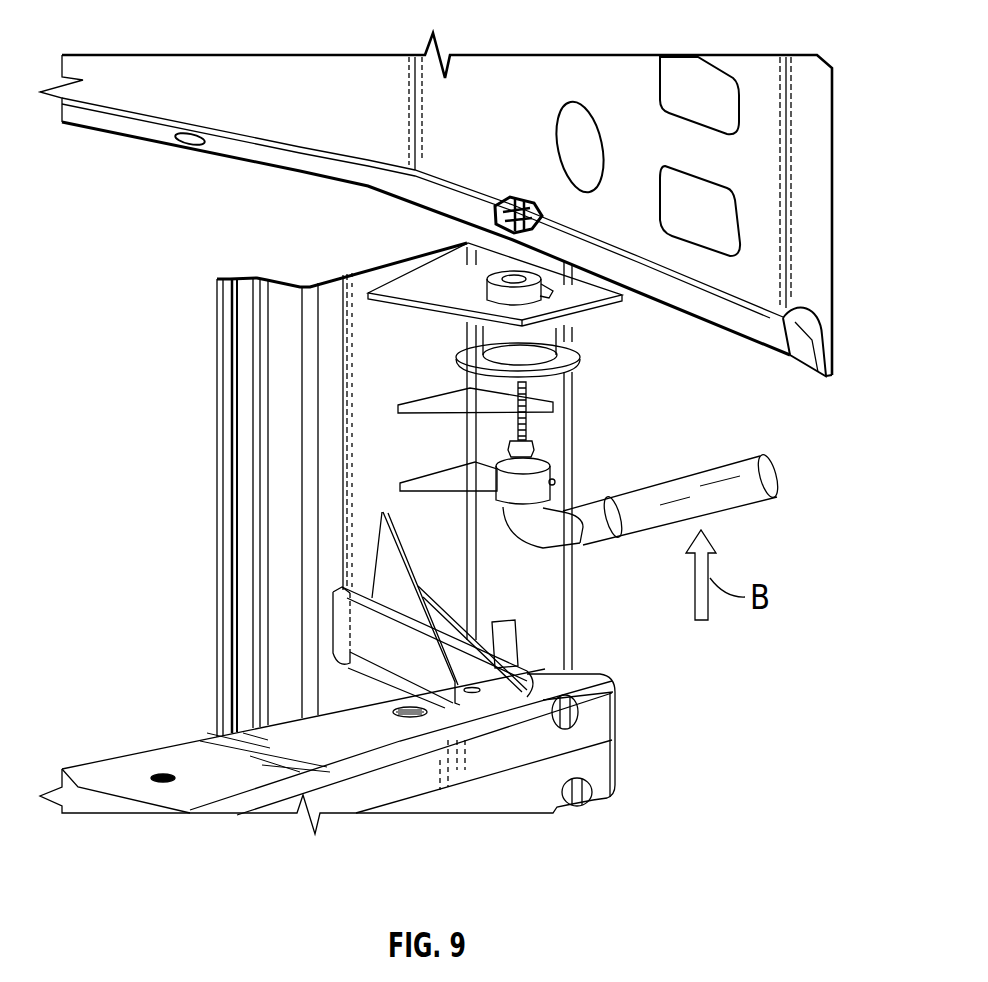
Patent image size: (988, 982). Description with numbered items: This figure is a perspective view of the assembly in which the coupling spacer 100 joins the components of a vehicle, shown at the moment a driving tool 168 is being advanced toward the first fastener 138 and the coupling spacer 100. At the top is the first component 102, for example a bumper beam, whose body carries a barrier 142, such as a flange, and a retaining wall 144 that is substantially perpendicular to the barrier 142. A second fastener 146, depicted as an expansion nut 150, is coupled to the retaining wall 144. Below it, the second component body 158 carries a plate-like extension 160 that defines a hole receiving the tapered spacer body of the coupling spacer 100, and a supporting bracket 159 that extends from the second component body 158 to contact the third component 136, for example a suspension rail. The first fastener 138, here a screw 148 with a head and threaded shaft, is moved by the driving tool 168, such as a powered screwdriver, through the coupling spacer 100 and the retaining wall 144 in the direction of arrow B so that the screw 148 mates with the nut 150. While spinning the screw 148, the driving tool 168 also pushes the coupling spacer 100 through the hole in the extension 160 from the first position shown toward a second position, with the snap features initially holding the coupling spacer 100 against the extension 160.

The coupling spacer 100 is at (598, 347).
The first component 102 is at (748, 68).
The third component 136 is at (500, 795).
The first fastener 138 is at (528, 432).
The barrier 142 is at (826, 376).
The retaining wall 144 is at (255, 150).
The second fastener 146 is at (522, 198).
The screw 148 is at (513, 425).
The nut 150 is at (512, 205).
The second component body 158 is at (393, 262).
The supporting bracket 159 is at (520, 668).
The extension 160 is at (596, 311).
The driving tool 168 is at (745, 502).